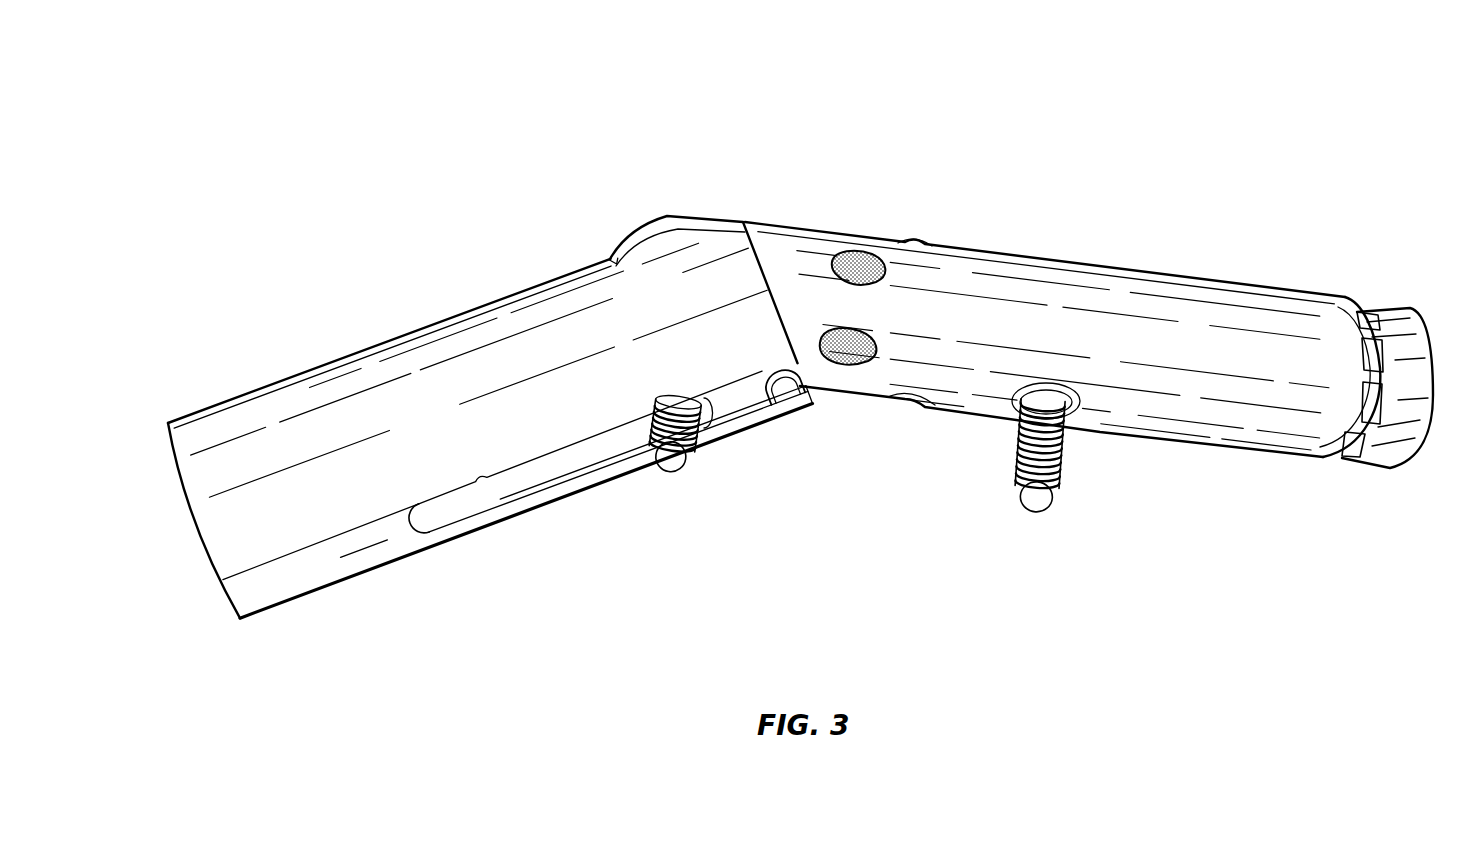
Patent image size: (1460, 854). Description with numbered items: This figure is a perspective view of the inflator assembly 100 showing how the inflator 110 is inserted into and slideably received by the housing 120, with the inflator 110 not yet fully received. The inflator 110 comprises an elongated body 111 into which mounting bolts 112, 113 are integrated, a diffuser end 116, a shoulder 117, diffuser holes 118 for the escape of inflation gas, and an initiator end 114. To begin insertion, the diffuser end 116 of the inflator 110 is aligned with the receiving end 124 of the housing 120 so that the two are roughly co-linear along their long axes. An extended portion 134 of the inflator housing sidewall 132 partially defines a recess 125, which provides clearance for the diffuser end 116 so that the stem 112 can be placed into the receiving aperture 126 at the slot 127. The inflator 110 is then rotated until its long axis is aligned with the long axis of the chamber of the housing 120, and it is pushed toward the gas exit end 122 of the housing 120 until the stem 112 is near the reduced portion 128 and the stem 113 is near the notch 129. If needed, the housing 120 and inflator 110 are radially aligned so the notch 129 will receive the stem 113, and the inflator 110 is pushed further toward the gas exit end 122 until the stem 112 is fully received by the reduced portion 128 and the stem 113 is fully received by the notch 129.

The inflator assembly 100 is at (662, 80).
The inflator 110 is at (1197, 262).
The elongated body 111 is at (1118, 305).
The mounting bolt 112 is at (672, 465).
The mounting bolt 113 is at (1037, 504).
The initiator end 114 is at (1432, 346).
The diffuser end 116 is at (650, 217).
The shoulder 117 is at (912, 240).
The diffuser holes 118 is at (882, 346).
The housing 120 is at (285, 372).
The gas exit end 122 is at (168, 455).
The receiving end 124 is at (755, 222).
The recess 125 is at (612, 258).
The receiving aperture 126 is at (520, 480).
The slot 127 is at (602, 452).
The reduced portion 128 is at (434, 518).
The notch 129 is at (784, 400).
The inflator housing sidewall 132 is at (515, 320).
The extended portion 134 is at (736, 398).